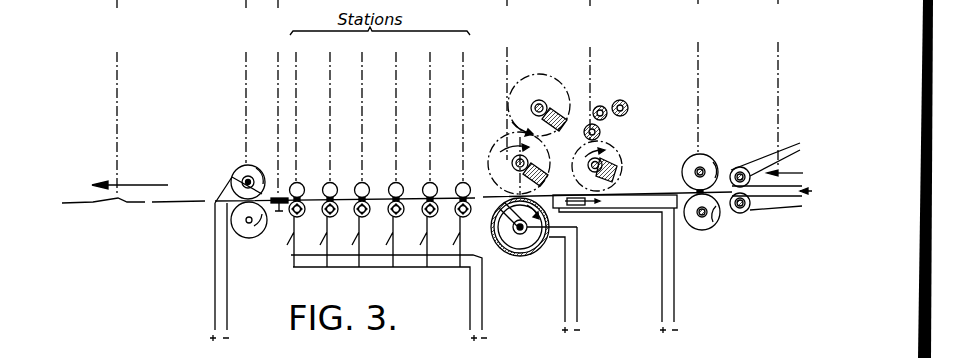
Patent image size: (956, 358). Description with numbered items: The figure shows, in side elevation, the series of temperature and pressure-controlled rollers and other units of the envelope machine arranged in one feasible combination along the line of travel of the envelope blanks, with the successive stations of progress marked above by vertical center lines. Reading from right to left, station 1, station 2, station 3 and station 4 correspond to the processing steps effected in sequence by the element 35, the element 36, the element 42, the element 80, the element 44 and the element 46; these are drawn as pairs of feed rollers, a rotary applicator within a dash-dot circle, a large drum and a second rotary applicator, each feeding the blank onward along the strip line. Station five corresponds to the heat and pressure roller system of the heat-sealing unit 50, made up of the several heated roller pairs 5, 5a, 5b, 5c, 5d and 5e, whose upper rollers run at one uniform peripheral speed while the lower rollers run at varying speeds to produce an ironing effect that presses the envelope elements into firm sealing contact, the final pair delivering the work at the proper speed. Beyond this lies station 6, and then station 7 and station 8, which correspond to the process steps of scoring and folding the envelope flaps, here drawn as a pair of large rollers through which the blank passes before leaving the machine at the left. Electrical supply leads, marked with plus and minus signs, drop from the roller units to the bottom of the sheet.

The station 1 is at (772, 98).
The station 2 is at (697, 76).
The station 3 is at (601, 70).
The station 4 is at (530, 97).
The roller pair 5 is at (463, 107).
The roller pair 5a is at (430, 107).
The roller pair 5b is at (395, 107).
The roller pair 5c is at (362, 107).
The roller pair 5d is at (330, 107).
The roller pair 5e is at (296, 107).
The station 6 is at (277, 105).
The station 7 is at (238, 170).
The station 8 is at (130, 97).
The processing element 35 is at (745, 168).
The processing element 36 is at (748, 213).
The processing element 42 is at (704, 186).
The processing element 44 is at (519, 257).
The processing element 46 is at (541, 166).
The heat-sealing unit 50 is at (373, 176).
The processing element 80 is at (613, 165).